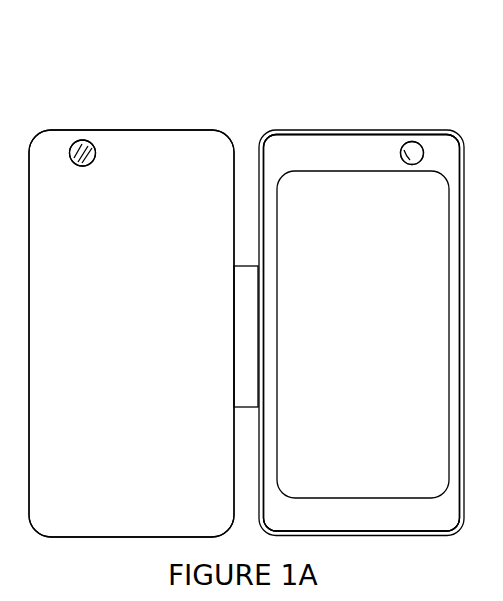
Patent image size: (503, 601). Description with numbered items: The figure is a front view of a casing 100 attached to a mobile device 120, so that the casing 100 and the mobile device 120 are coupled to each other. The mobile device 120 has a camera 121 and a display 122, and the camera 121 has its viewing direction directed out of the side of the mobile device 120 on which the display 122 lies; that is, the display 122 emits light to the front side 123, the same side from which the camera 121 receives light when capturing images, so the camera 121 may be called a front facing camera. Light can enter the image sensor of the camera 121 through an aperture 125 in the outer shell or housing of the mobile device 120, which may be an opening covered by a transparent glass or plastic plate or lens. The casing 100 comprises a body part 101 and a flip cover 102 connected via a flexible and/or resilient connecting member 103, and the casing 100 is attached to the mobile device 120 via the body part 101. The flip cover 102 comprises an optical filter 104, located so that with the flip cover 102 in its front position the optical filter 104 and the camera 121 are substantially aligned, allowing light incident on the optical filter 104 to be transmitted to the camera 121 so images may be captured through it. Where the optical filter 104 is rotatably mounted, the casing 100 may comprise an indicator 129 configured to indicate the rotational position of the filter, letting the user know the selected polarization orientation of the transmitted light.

The casing 100 is at (147, 118).
The body part 101 is at (264, 136).
The flip cover 102 is at (122, 137).
The connecting member 103 is at (245, 305).
The optical filter 104 is at (80, 141).
The indicator 129 is at (71, 168).
The mobile device 120 is at (345, 142).
The camera 121 is at (418, 143).
The display 122 is at (424, 308).
The front side 123 is at (335, 141).
The aperture 125 is at (413, 156).